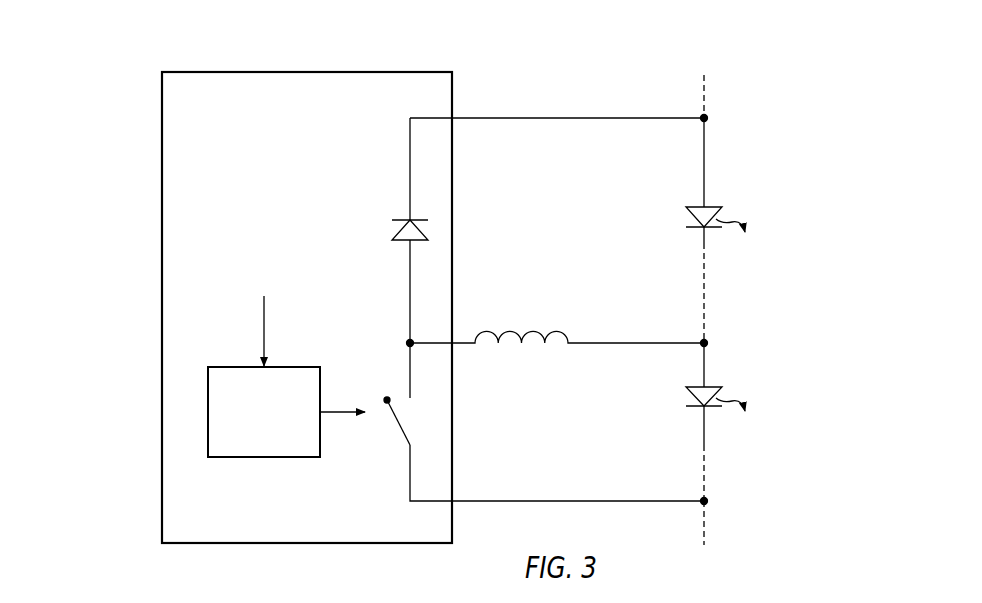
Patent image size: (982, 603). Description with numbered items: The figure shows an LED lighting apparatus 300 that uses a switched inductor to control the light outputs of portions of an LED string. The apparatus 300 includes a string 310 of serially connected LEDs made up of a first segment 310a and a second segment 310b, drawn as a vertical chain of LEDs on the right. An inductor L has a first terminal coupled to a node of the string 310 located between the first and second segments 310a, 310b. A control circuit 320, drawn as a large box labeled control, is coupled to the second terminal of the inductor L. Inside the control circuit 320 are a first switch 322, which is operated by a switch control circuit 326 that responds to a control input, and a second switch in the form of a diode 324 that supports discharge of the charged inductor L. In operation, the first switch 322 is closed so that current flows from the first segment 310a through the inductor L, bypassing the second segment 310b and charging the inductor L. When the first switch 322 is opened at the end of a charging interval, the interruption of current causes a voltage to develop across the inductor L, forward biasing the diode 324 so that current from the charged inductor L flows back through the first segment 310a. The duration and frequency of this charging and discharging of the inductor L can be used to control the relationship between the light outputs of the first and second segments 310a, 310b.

The LED lighting apparatus 300 is at (112, 90).
The string 310 is at (740, 100).
The first segment 310a is at (742, 210).
The second segment 310b is at (748, 385).
The control circuit 320 is at (353, 72).
The first switch 322 is at (393, 437).
The diode 324 is at (377, 222).
The switch control circuit 326 is at (283, 367).
The inductor L is at (557, 324).